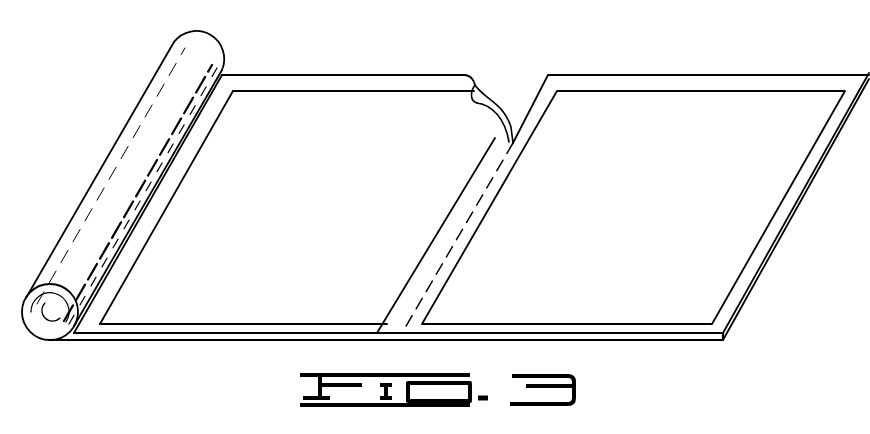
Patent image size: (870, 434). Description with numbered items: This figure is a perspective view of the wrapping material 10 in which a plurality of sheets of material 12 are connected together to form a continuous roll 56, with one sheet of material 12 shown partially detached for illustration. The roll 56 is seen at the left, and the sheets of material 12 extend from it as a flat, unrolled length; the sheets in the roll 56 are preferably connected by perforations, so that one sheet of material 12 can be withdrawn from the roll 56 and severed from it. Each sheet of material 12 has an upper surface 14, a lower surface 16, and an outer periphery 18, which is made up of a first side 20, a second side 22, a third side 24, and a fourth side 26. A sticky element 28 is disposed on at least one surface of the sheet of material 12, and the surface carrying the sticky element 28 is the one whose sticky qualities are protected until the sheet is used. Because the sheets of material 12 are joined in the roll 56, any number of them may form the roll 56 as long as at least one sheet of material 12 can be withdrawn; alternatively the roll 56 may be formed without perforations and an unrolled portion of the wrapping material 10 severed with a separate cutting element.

The wrapping material 10 is at (612, 47).
The sheet of material 12 is at (341, 64).
The upper surface 14 is at (793, 195).
The lower surface 16 is at (485, 82).
The outer periphery 18 is at (703, 340).
The first side 20 is at (788, 233).
The second side 22 is at (540, 78).
The third side 24 is at (633, 72).
The fourth side 26 is at (634, 342).
The sticky element 28 is at (714, 290).
The roll 56 is at (231, 47).